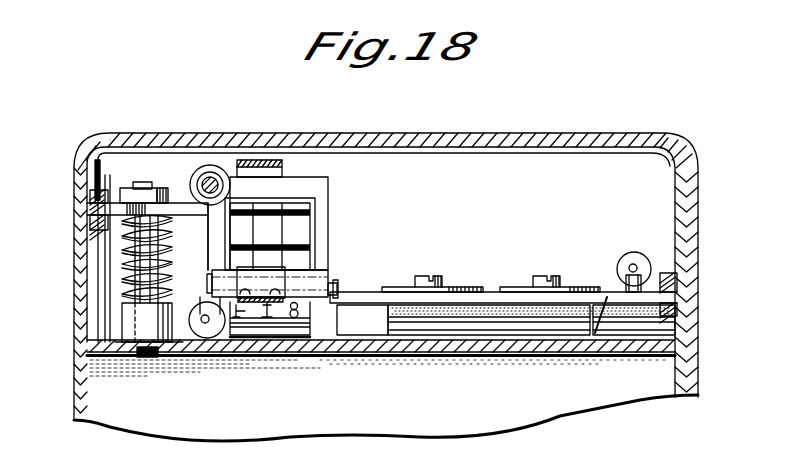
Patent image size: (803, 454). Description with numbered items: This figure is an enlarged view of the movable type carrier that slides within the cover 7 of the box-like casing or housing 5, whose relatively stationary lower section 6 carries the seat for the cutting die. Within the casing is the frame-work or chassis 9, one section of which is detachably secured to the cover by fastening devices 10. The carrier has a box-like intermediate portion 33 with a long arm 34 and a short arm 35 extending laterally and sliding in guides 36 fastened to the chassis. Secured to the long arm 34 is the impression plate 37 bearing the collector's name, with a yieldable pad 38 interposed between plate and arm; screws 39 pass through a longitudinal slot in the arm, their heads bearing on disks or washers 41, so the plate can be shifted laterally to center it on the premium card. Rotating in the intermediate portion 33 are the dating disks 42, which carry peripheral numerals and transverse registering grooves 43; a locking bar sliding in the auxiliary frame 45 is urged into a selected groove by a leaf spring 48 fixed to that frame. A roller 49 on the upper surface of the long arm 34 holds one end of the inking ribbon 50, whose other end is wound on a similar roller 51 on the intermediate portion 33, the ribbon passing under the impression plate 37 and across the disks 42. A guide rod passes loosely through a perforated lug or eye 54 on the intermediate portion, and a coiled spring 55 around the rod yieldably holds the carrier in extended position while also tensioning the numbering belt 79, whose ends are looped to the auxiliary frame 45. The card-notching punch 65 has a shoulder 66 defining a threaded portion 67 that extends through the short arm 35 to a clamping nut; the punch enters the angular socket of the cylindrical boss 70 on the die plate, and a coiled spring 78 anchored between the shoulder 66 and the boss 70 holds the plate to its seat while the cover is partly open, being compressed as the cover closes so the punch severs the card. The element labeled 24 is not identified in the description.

The box-like casing or housing 5 is at (163, 128).
The lower section 6 is at (138, 413).
The upper section or cover 7 is at (603, 137).
The frame-work or chassis 9 is at (680, 190).
The fastening devices 10 is at (83, 240).
The counter 24 is at (269, 450).
The box-like intermediate portion 33 is at (313, 182).
The long arm 34 is at (357, 288).
The short arm 35 is at (180, 203).
The guides 36 is at (95, 175).
The impression plate 37 is at (532, 323).
The yieldable pad 38 is at (480, 308).
The screws 39 is at (425, 278).
The disks or washers 41 is at (455, 287).
The disks 42 is at (312, 202).
The registering grooves 43 is at (297, 207).
The auxiliary frame 45 is at (313, 282).
The leaf spring 48 is at (334, 290).
The roller 49 is at (634, 251).
The inking ribbon 50 is at (610, 290).
The roller 51 is at (212, 327).
The perforated lug or eye 54 is at (217, 181).
The coiled spring 55 is at (235, 197).
The movable element or punch 65 is at (243, 200).
The shoulder 66 is at (90, 208).
The threaded portion 67 is at (141, 184).
The cylindrical boss 70 is at (90, 340).
The coiled spring 78 is at (122, 250).
The belt 79 is at (186, 253).